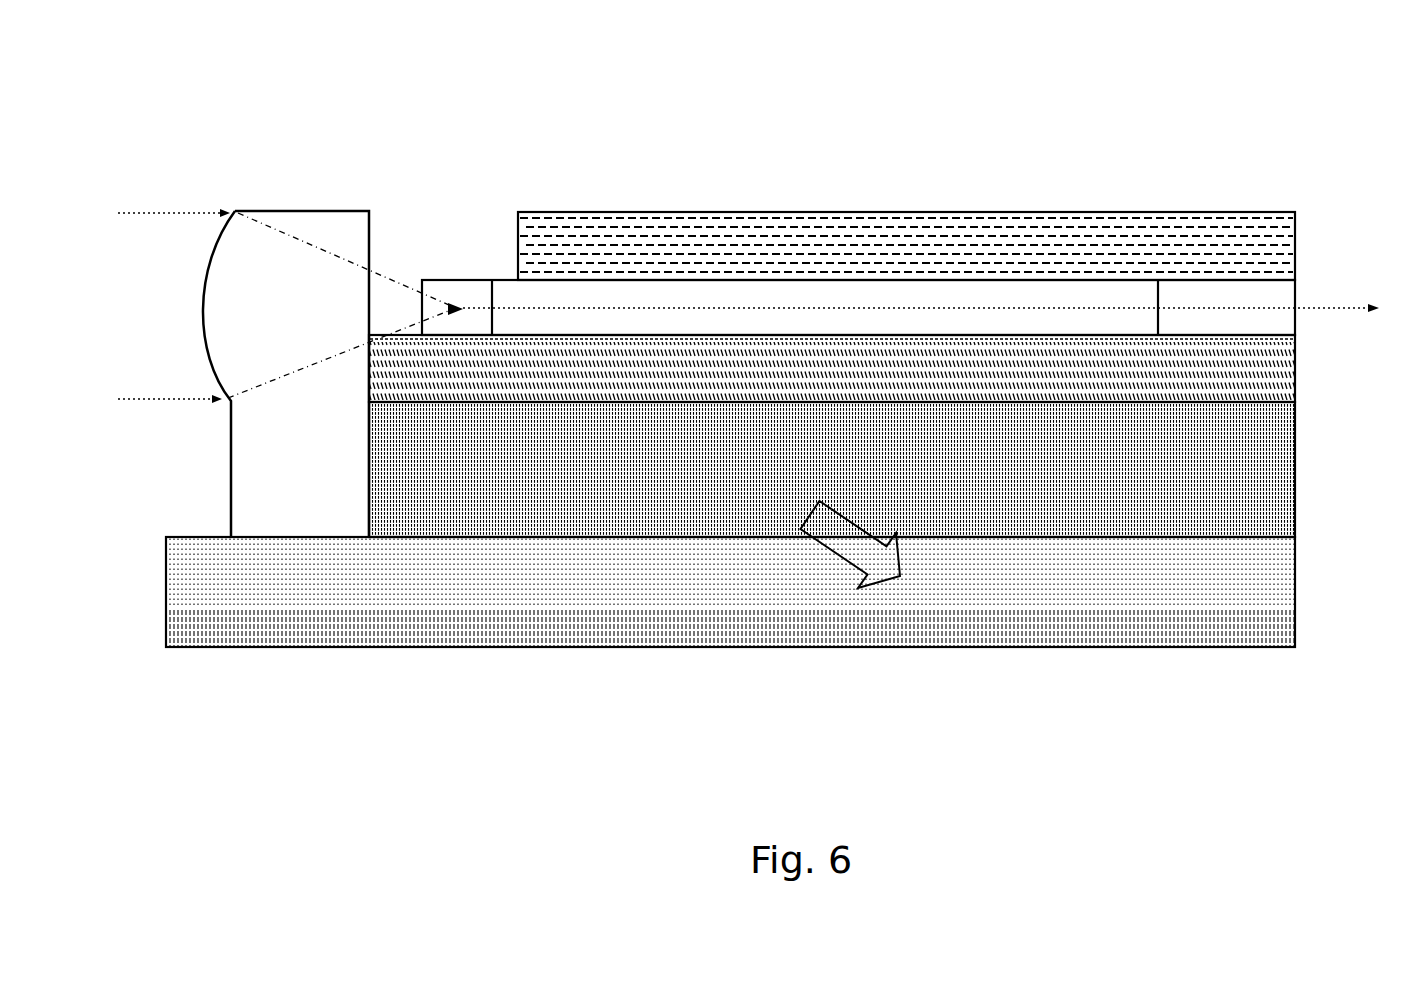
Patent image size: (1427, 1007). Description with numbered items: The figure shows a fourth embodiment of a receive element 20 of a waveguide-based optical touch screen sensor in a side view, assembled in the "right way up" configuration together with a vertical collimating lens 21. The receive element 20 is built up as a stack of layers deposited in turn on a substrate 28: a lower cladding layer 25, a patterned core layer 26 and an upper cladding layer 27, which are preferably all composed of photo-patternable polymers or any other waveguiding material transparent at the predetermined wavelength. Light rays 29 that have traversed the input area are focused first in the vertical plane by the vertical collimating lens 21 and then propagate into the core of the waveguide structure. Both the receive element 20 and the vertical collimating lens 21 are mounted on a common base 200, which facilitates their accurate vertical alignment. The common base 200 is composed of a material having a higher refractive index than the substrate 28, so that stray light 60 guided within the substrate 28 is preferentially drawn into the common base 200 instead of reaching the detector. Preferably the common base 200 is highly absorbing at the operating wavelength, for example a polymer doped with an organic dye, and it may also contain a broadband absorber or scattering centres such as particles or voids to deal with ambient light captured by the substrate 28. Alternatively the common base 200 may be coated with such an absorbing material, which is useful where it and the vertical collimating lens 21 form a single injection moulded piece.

The receive element 20 is at (810, 167).
The vertical collimating lens 21 is at (255, 194).
The lower cladding layer 25 is at (1295, 368).
The patterned core layer 26 is at (1293, 287).
The upper cladding layer 27 is at (1290, 218).
The substrate 28 is at (1290, 490).
The light rays 29 is at (729, 307).
The stray light 60 is at (872, 556).
The common base 200 is at (1297, 582).